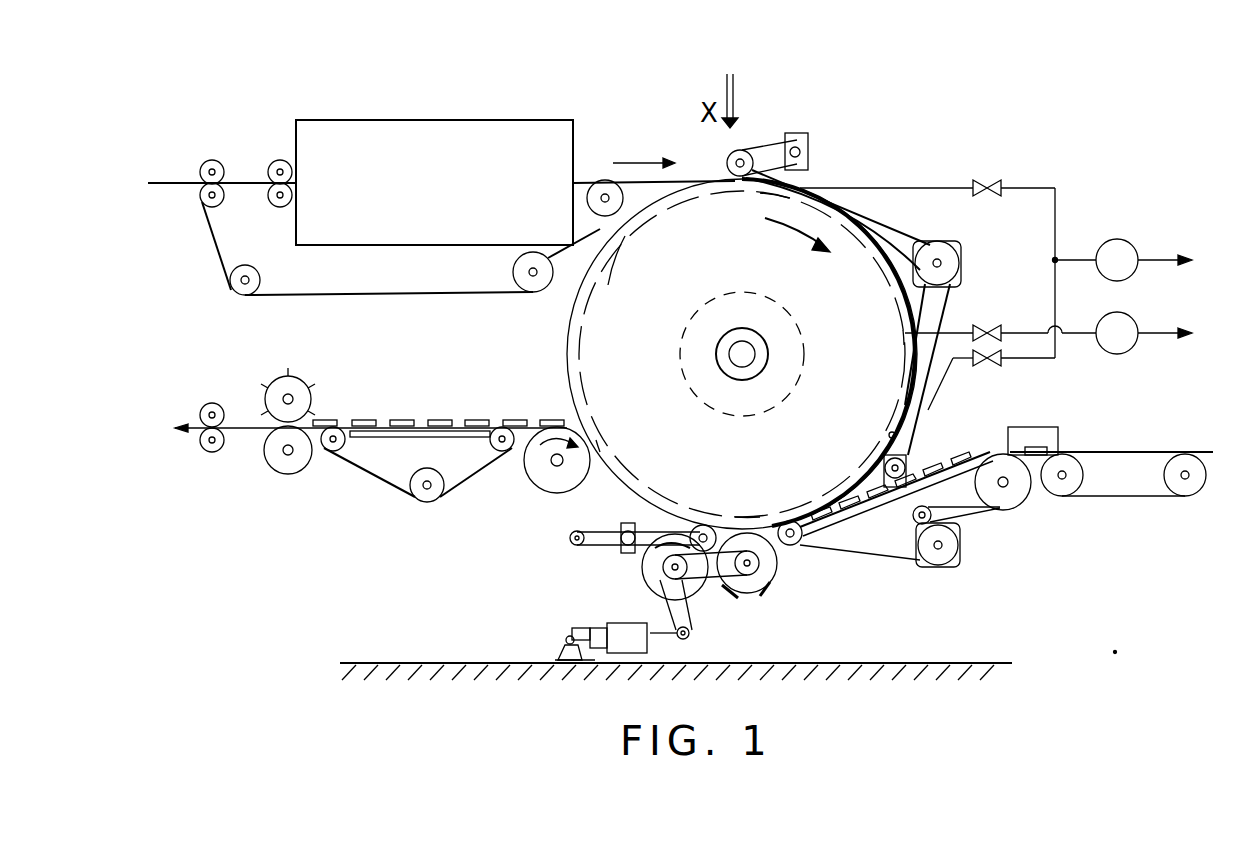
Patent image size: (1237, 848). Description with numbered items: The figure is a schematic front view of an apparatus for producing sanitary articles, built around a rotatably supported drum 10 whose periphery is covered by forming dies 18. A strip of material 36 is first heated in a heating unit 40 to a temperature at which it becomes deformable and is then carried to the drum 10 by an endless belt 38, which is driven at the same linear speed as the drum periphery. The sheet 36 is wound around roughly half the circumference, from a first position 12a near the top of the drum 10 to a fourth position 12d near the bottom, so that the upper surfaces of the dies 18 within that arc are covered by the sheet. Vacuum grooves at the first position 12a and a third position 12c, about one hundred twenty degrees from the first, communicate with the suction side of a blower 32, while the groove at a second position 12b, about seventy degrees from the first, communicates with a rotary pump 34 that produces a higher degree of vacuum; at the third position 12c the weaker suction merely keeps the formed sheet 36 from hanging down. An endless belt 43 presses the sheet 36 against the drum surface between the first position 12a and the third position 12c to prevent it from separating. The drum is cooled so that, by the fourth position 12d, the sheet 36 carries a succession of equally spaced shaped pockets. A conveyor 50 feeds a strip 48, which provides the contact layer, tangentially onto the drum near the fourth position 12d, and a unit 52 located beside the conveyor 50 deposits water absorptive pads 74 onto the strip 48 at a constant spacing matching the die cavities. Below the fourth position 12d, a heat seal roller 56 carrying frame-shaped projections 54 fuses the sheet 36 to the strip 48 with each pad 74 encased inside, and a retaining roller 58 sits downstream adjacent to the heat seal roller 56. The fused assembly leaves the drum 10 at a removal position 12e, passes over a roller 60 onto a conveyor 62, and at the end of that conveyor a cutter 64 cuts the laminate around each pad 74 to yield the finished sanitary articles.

The drum 10 is at (560, 352).
The first position 12a is at (778, 196).
The second position 12b is at (910, 333).
The third position 12c is at (890, 433).
The fourth position 12d is at (747, 520).
The removal position 12e is at (598, 442).
The forming dies 18 is at (626, 240).
The blower 32 is at (1140, 252).
The rotary pump 34 is at (1140, 325).
The strip of material 36 is at (686, 181).
The endless belt 38 is at (412, 295).
The heating unit 40 is at (480, 130).
The endless belt 43 is at (872, 237).
The strip 48 is at (925, 477).
The conveyor 50 is at (1018, 508).
The unit 52 is at (1050, 440).
The frame-shaped projections 54 is at (780, 568).
The heat seal roller 56 is at (760, 598).
The retaining roller 58 is at (685, 528).
The roller 60 is at (530, 476).
The conveyor 62 is at (378, 487).
The cutter 64 is at (312, 385).
The water absorptive pads 74 is at (980, 450).